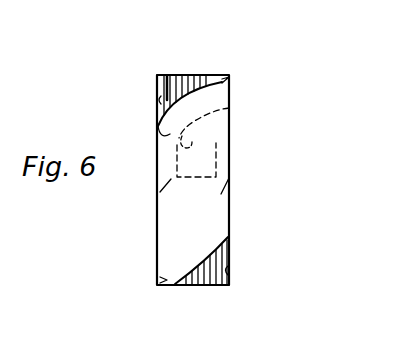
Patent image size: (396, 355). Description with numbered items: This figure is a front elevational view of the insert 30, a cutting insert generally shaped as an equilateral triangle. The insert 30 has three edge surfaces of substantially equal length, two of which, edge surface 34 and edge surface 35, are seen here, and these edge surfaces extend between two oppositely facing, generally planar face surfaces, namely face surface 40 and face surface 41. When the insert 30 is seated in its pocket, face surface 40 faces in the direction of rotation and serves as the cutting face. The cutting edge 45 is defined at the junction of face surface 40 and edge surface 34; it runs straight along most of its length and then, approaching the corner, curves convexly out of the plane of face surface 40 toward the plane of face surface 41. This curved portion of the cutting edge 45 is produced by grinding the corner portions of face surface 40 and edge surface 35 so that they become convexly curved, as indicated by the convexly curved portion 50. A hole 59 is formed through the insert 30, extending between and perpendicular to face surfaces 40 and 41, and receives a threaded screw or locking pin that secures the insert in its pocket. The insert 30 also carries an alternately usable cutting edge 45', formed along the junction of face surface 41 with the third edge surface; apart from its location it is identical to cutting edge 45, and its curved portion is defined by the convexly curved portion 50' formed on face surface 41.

The insert 30 is at (155, 235).
The edge surface 34 is at (197, 75).
The edge surface 35 is at (213, 215).
The face surface 40 is at (157, 106).
The face surface 41 is at (230, 243).
The cutting edge 45 is at (118, 55).
The alternately usable cutting edge 45' is at (285, 296).
The convexly curved portion 50 is at (182, 79).
The convexly curved portion 50' is at (253, 293).
The hole 59 is at (232, 106).